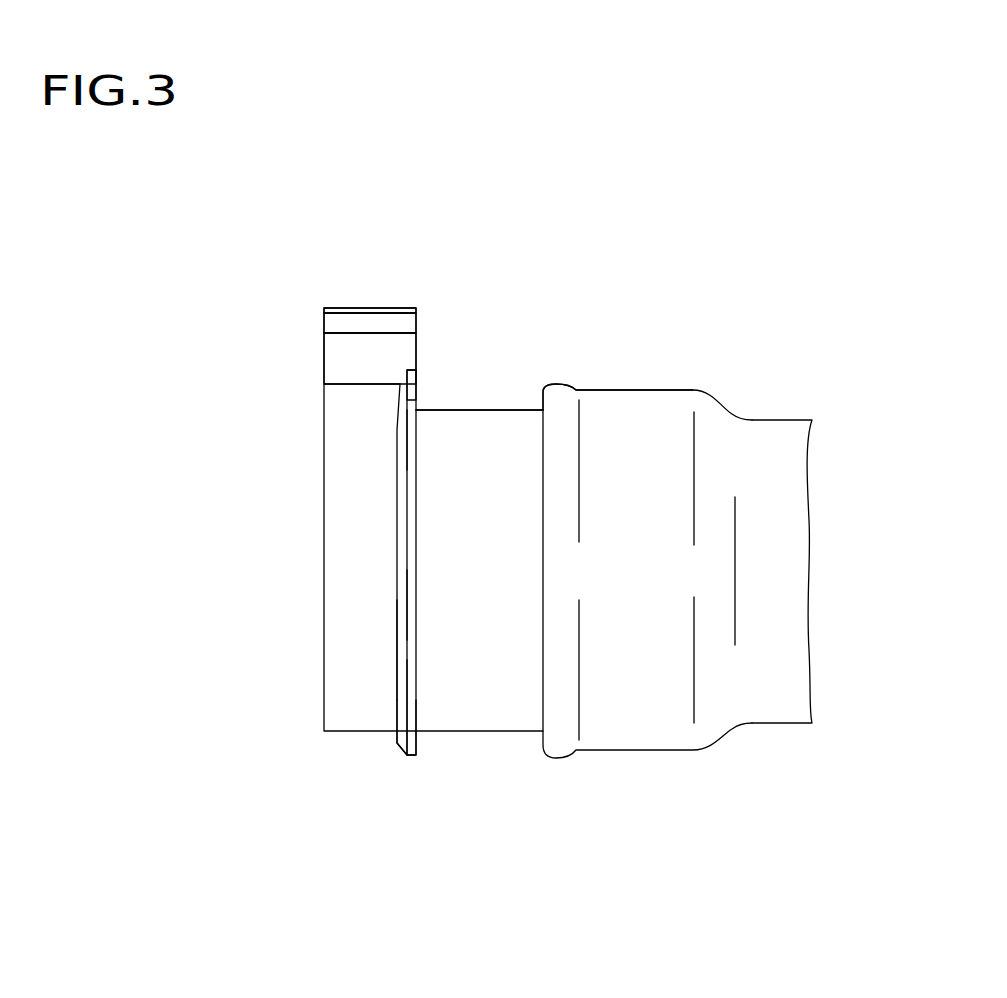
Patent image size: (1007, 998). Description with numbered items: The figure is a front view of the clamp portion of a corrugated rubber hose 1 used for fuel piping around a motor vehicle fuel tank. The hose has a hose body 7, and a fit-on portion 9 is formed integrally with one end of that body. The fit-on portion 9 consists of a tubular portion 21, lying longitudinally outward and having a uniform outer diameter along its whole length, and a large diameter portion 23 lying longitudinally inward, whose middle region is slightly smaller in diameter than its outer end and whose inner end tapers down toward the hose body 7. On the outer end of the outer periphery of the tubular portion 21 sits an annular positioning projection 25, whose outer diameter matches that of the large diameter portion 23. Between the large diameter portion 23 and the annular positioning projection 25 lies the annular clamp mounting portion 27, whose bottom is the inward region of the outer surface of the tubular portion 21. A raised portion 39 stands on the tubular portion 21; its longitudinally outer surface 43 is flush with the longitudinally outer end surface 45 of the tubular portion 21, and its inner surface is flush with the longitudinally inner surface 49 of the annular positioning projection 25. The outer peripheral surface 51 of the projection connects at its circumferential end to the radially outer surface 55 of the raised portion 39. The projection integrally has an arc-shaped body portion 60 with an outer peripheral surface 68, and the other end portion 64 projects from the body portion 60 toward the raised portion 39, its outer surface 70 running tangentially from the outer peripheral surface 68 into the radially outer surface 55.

The corrugated rubber hose 1 is at (490, 203).
The hose body 7 is at (758, 737).
The fit-on portion 9 is at (502, 352).
The tubular portion 21 is at (452, 742).
The large diameter portion 23 is at (622, 752).
The annular positioning projection 25 is at (392, 750).
The annular clamp mounting portion 27 is at (513, 409).
The raised portion 39 is at (360, 311).
The longitudinally outer surface 43 is at (324, 321).
The longitudinally outer end surface 45 is at (325, 521).
The longitudinally inner surface 49 is at (416, 356).
The outer peripheral surface 51 is at (404, 646).
The radially outer surface 55 is at (358, 366).
The body portion 60 is at (413, 601).
The other end portion 64 is at (413, 437).
The outer peripheral surface 68 is at (418, 696).
The outer surface 70 is at (413, 397).